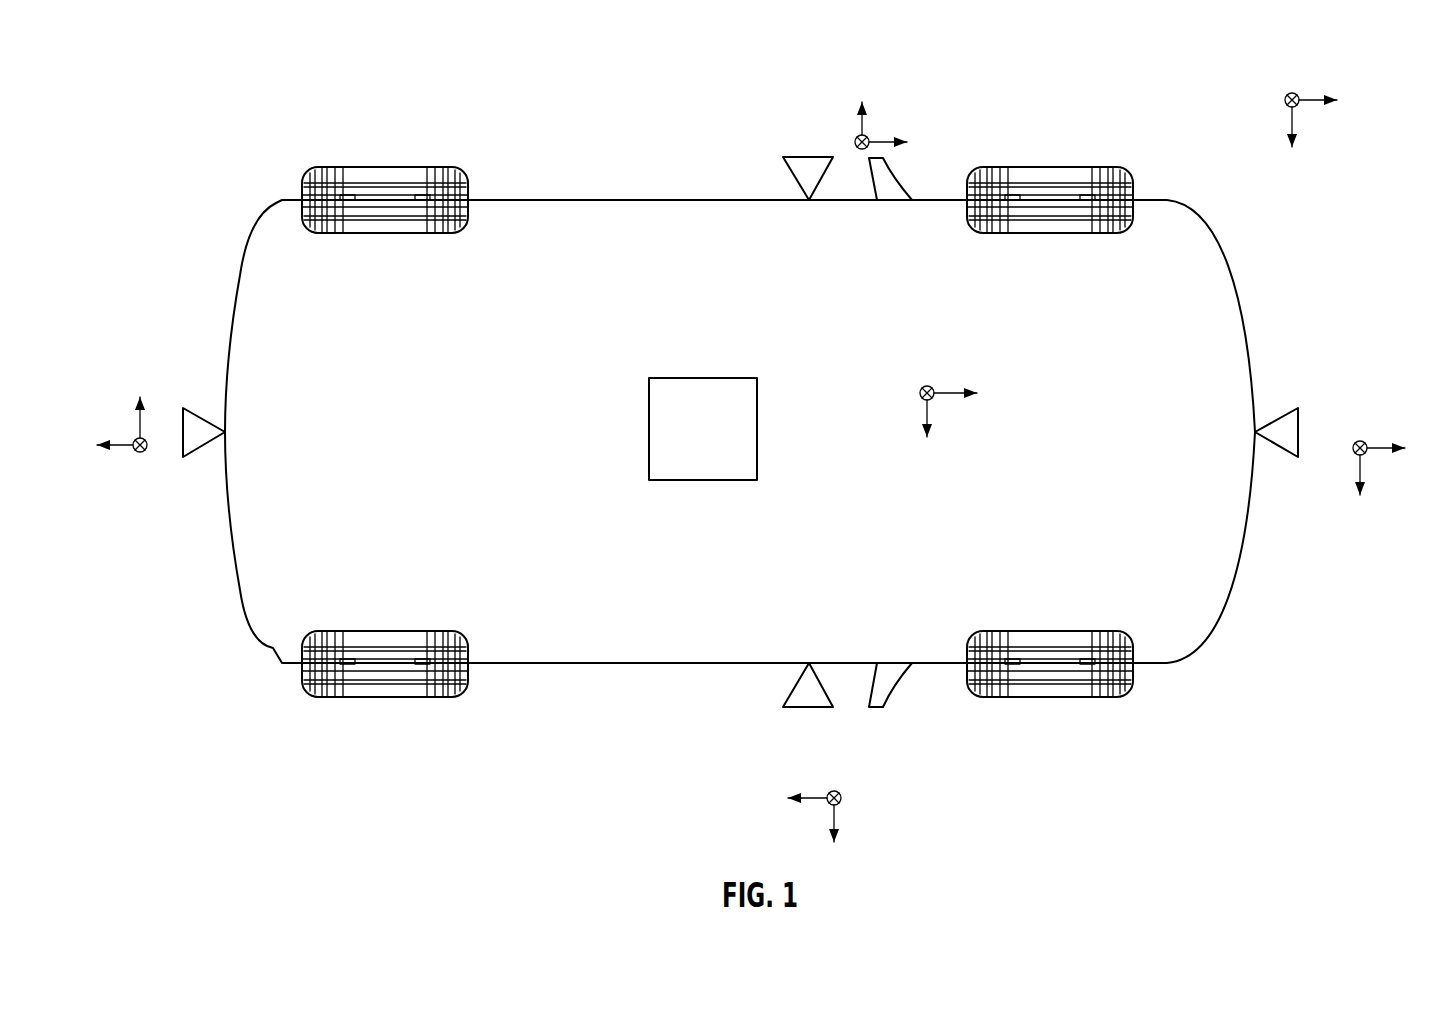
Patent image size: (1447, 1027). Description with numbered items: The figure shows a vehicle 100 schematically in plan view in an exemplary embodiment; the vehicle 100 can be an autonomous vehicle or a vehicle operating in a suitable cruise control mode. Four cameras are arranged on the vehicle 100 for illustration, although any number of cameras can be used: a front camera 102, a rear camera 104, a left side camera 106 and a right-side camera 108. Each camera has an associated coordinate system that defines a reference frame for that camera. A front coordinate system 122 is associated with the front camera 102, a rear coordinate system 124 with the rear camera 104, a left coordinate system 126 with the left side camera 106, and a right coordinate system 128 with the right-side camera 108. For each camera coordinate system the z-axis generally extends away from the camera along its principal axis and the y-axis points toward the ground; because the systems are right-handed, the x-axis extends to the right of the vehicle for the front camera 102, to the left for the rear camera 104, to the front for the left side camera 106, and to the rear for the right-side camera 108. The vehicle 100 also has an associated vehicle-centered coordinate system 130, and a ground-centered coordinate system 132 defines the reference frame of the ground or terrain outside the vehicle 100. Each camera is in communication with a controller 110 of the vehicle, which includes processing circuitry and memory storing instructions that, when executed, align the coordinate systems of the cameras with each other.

The vehicle 100 is at (1177, 138).
The front camera 102 is at (1276, 420).
The rear camera 104 is at (207, 421).
The left side camera 106 is at (795, 157).
The right-side camera 108 is at (822, 707).
The controller 110 is at (702, 378).
The front coordinate system 122 is at (1402, 410).
The rear coordinate system 124 is at (122, 415).
The left coordinate system 126 is at (906, 104).
The right coordinate system 128 is at (863, 820).
The vehicle-centered coordinate system 130 is at (955, 381).
The ground-centered coordinate system 132 is at (1340, 80).